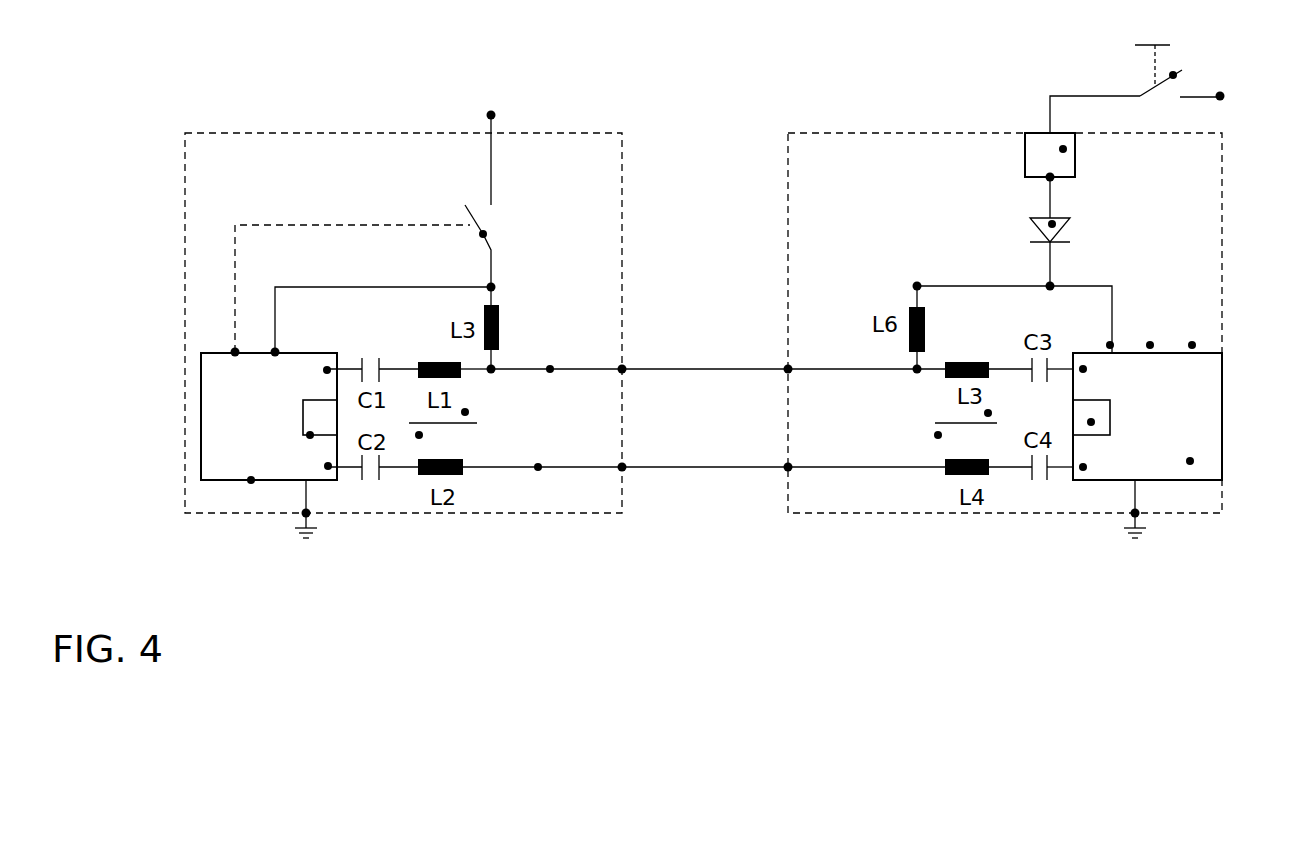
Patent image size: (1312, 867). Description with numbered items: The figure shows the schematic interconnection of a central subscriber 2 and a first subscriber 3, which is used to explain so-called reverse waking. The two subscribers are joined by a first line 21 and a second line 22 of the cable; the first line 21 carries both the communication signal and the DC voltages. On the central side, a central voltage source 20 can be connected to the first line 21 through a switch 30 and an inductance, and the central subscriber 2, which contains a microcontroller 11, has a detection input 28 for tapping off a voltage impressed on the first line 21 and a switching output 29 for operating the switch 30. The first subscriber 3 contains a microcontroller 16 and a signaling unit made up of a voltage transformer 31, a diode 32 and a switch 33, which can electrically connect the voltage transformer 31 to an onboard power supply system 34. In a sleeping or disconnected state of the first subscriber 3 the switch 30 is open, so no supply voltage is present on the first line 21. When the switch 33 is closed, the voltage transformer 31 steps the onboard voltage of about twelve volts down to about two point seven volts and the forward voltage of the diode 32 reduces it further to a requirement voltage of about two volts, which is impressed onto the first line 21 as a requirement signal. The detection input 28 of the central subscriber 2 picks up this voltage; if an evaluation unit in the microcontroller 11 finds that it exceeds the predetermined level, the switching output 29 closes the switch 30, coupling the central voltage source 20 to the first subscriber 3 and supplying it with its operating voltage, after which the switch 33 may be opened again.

The central subscriber 2 is at (251, 480).
The first subscriber 3 is at (1190, 461).
The microcontroller 11 is at (310, 435).
The microcontroller 16 is at (1091, 422).
The central voltage source 20 is at (491, 115).
The first line 21 is at (550, 369).
The second line 22 is at (538, 467).
The detection input 28 is at (275, 352).
The switching output 29 is at (235, 352).
The switch 30 is at (483, 234).
The voltage transformer 31 is at (1063, 149).
The diode 32 is at (1052, 224).
The switch 33 is at (1175, 73).
The onboard power supply system 34 is at (1220, 96).